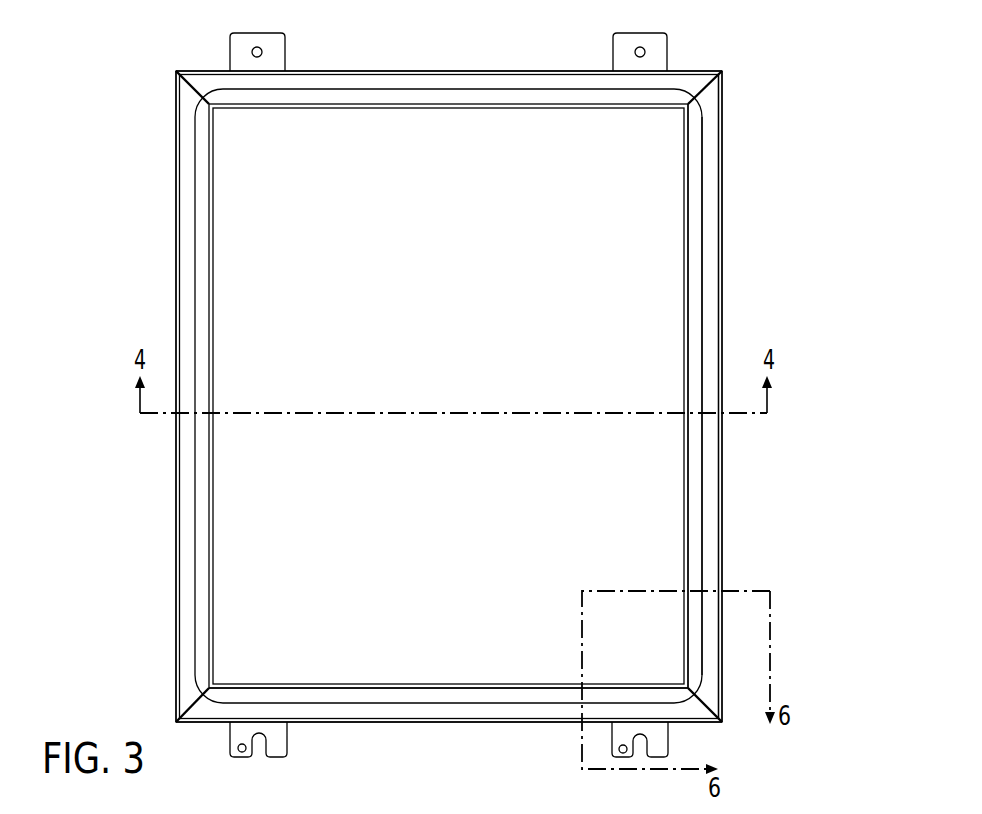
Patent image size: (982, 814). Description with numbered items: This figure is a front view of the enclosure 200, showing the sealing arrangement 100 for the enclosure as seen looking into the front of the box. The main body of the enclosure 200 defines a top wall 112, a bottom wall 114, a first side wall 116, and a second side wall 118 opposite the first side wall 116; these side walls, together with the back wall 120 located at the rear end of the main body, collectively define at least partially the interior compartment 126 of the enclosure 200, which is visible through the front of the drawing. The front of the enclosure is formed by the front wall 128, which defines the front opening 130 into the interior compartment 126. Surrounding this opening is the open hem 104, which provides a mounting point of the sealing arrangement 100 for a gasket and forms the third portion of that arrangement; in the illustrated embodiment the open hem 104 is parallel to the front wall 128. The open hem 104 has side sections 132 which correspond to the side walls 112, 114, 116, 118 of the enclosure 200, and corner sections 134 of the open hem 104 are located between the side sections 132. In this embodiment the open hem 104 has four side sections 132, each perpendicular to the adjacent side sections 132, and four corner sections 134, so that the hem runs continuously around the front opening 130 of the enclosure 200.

The sealing arrangement 100 is at (66, 54).
The open hem 104 is at (690, 143).
The top wall 112 is at (449, 70).
The bottom wall 114 is at (448, 723).
The first side wall 116 is at (722, 220).
The second side wall 118 is at (175, 243).
The back wall 120 is at (672, 537).
The interior compartment 126 is at (633, 340).
The front wall 128 is at (712, 281).
The front opening 130 is at (371, 694).
The side sections 132 is at (90, 402).
The corner sections 134 is at (396, 385).
The enclosure 200 is at (707, 56).